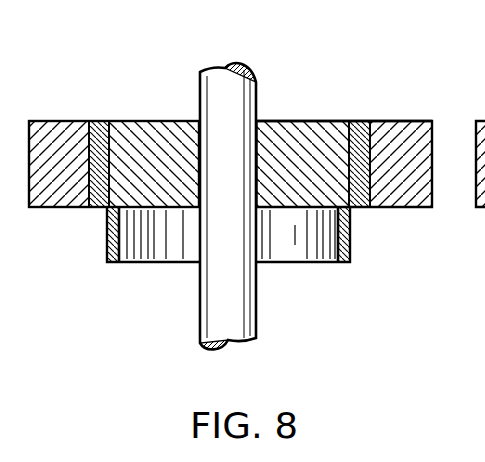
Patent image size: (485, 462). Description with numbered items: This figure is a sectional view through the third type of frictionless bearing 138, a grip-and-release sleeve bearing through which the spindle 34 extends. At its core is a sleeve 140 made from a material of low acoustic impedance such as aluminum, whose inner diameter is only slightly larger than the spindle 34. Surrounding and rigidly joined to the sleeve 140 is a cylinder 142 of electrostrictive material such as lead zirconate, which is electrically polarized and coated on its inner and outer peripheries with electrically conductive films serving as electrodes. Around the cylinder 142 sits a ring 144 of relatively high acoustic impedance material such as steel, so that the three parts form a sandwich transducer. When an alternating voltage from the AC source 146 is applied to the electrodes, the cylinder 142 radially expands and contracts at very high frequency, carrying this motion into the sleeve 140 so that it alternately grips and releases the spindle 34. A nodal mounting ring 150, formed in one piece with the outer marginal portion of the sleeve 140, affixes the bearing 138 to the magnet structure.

The spindle 34 is at (246, 318).
The frictionless bearing 138 is at (369, 107).
The sleeve 140 is at (296, 132).
The cylinder 142 is at (358, 202).
The ring 144 is at (396, 142).
The AC source 146 is at (109, 121).
The nodal mounting ring 150 is at (112, 242).